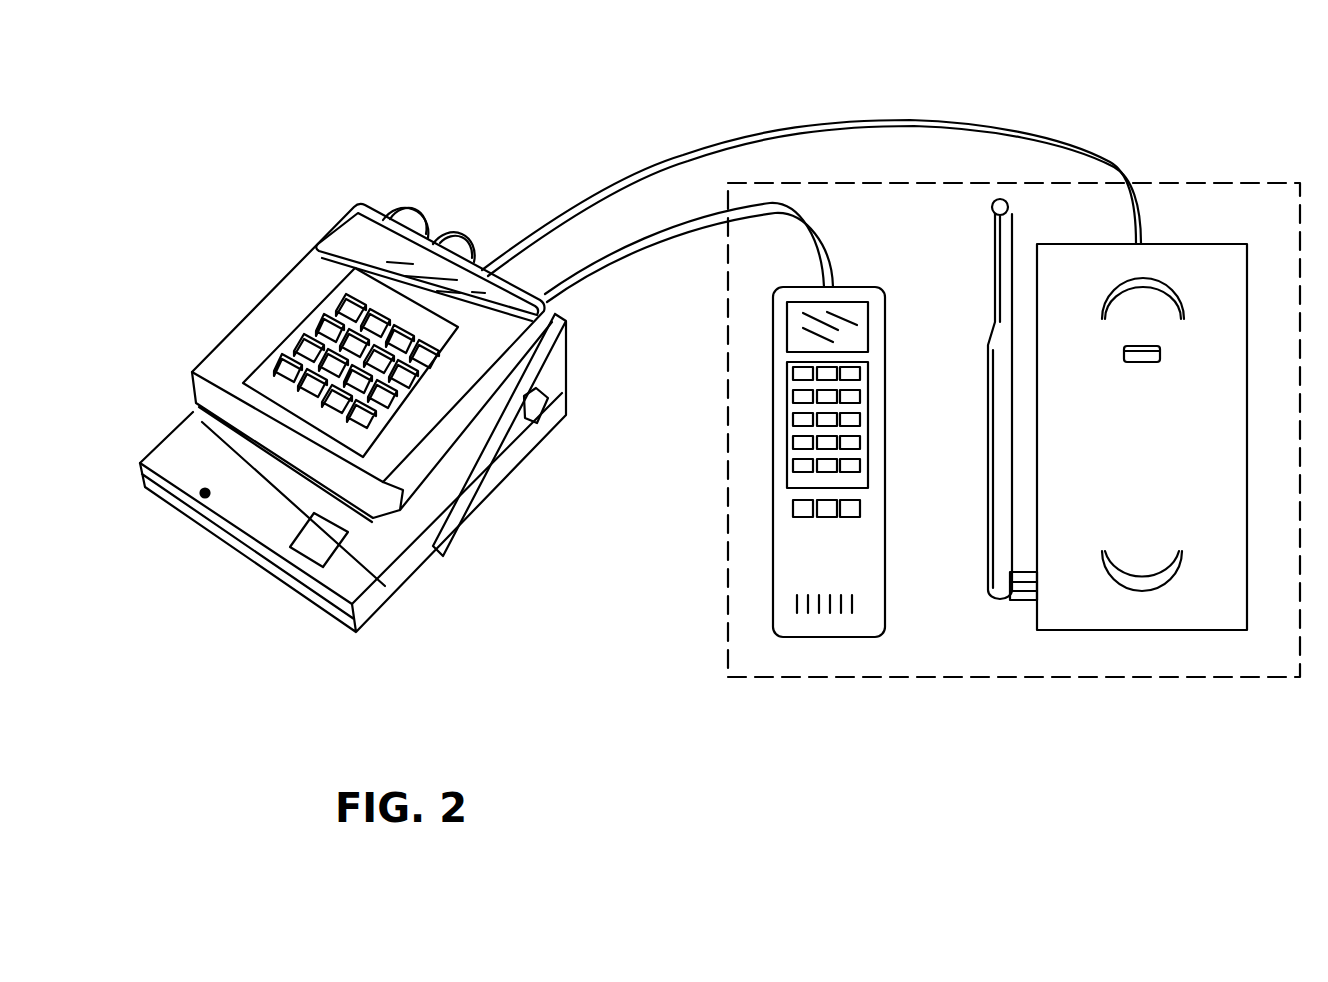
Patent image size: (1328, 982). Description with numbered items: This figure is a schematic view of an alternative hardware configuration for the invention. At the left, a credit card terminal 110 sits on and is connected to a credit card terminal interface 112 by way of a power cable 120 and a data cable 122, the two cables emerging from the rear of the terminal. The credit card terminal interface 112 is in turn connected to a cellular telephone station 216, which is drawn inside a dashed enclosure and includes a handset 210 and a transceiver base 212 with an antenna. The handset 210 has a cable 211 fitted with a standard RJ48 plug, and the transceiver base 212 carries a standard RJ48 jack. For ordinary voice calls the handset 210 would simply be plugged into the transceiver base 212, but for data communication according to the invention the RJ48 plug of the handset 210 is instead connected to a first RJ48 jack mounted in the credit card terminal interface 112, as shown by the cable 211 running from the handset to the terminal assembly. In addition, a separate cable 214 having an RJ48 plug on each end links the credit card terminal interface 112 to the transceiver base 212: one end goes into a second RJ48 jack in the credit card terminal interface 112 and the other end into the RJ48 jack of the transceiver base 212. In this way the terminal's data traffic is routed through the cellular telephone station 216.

The credit card terminal 110 is at (263, 315).
The credit card terminal interface 112 is at (377, 592).
The power cable 120 is at (407, 200).
The data cable 122 is at (447, 222).
The handset 210 is at (847, 640).
The cable 211 is at (630, 233).
The transceiver base 212 is at (1178, 630).
The cable 214 is at (683, 155).
The cellular telephone station 216 is at (992, 680).